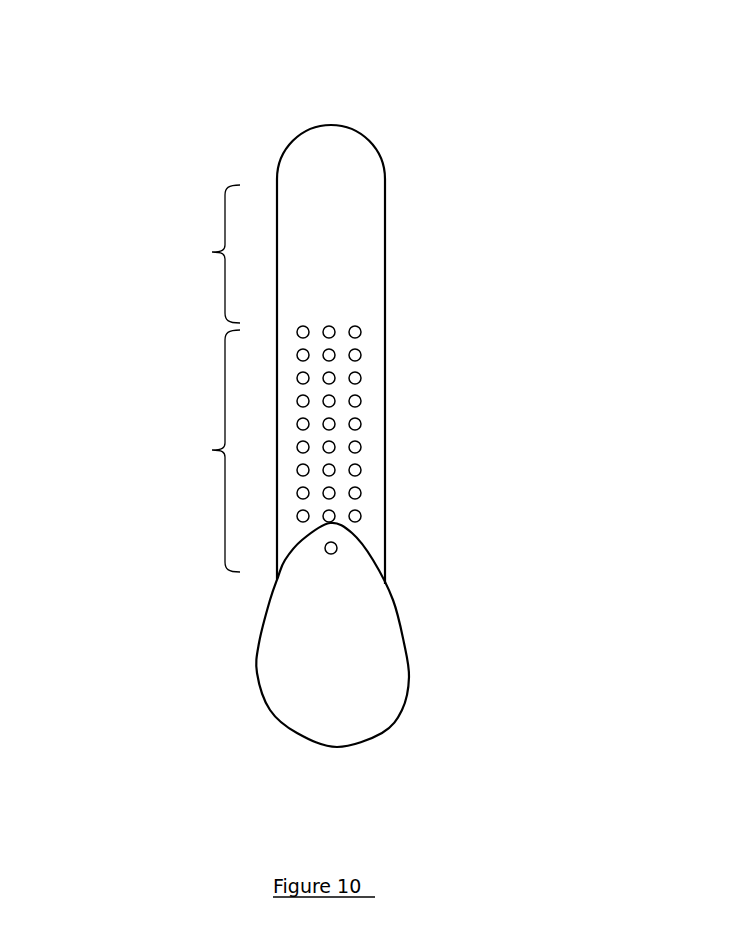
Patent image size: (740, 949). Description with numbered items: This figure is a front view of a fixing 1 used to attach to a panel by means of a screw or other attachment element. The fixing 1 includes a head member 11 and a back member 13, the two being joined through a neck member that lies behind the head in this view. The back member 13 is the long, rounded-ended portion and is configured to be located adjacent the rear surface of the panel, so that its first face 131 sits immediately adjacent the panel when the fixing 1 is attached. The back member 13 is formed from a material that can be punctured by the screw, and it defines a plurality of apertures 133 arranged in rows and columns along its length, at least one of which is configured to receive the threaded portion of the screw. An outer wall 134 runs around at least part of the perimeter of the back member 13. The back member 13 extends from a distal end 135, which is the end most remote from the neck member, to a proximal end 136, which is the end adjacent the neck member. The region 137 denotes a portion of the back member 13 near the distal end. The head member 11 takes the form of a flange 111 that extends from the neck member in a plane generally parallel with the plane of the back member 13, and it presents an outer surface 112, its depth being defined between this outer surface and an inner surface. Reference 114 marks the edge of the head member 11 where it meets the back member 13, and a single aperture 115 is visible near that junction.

The fixing 1 is at (143, 113).
The head member 11 is at (277, 660).
The back member 13 is at (365, 173).
The flange 111 is at (395, 622).
The outer surface 112 is at (312, 699).
The upper arc of bulbous portion 114 is at (373, 563).
The single aperture 115 is at (336, 547).
The first face 131 is at (370, 218).
The apertures 133 is at (257, 449).
The outer wall 134 is at (325, 132).
The distal end 135 is at (375, 118).
The proximal end 136 is at (432, 720).
The non-perforated region 137 is at (201, 254).